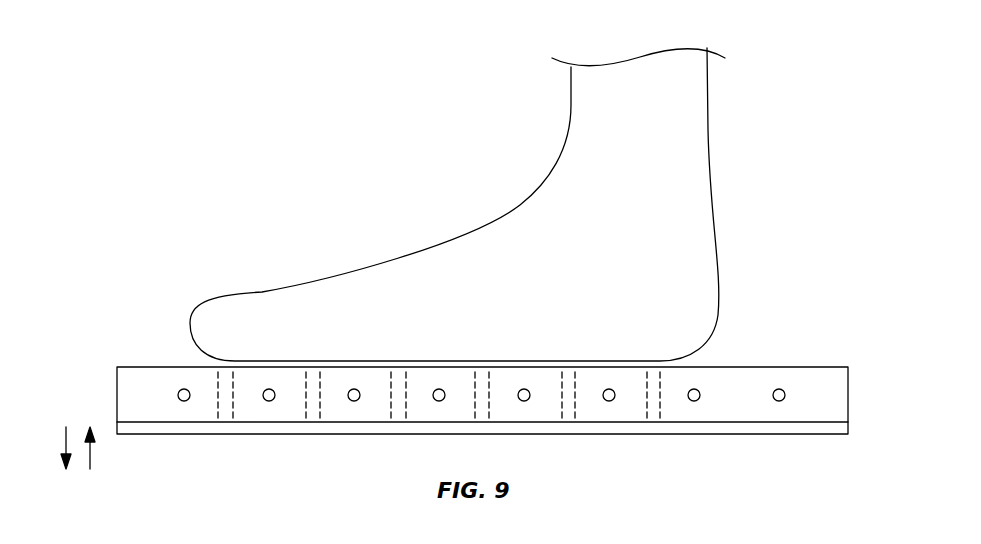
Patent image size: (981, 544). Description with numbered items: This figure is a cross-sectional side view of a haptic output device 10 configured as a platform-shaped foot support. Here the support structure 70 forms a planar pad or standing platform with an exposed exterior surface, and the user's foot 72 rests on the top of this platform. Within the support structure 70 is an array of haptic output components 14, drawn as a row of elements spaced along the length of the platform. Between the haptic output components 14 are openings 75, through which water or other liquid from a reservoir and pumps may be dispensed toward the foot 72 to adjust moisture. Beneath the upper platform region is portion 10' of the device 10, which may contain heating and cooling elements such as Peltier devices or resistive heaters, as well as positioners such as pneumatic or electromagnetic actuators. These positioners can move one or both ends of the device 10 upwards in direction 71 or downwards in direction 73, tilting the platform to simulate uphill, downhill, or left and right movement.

The device 10 is at (900, 406).
The portion of device 10' is at (482, 456).
The haptic output components 14 is at (183, 402).
The support structure 70 is at (118, 394).
The direction 71 is at (65, 445).
The foot 72 is at (721, 296).
The direction 73 is at (91, 448).
The openings 75 is at (218, 403).